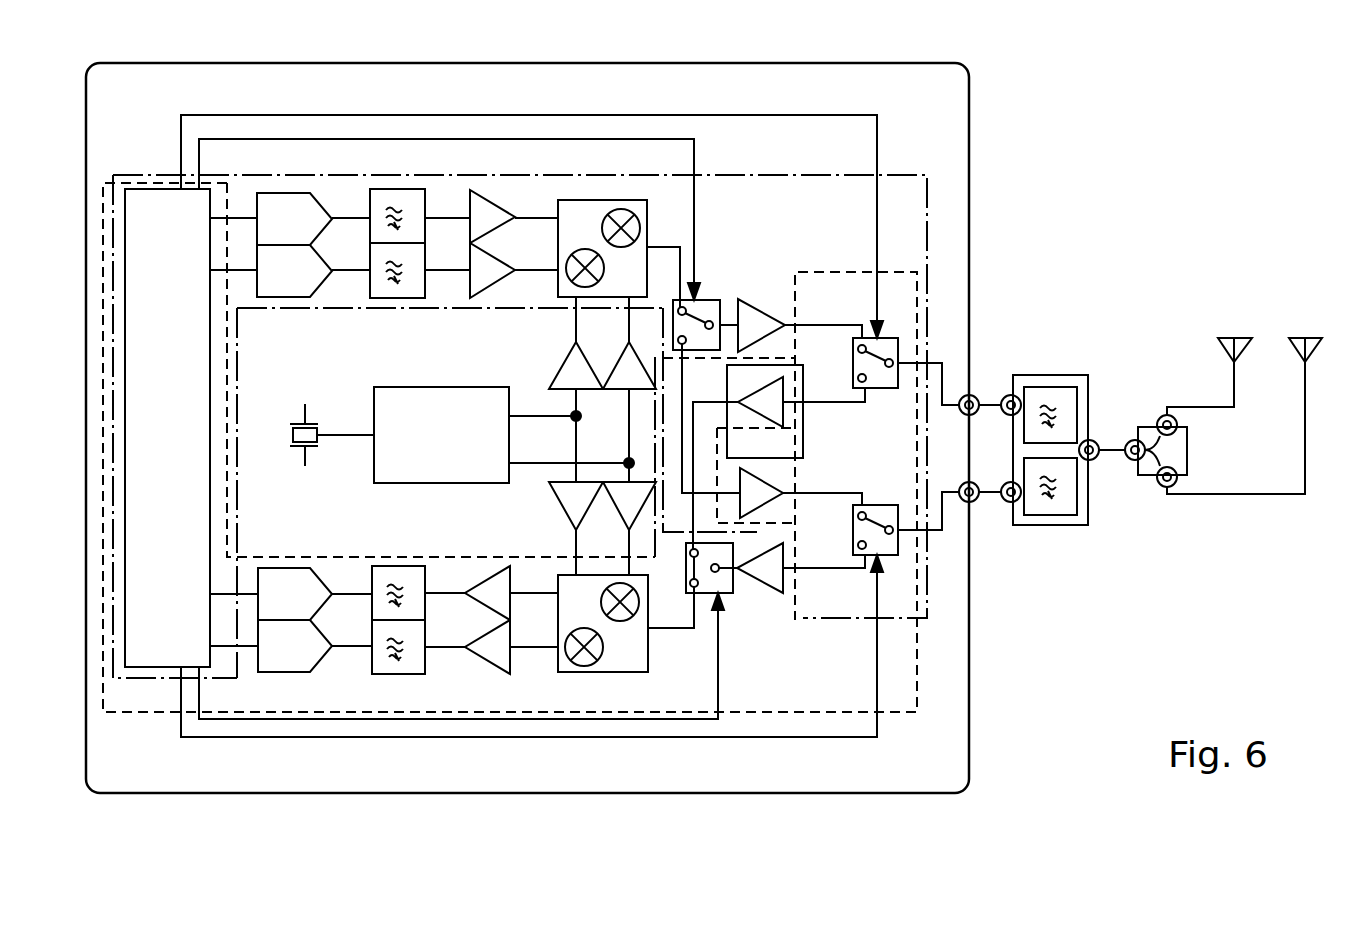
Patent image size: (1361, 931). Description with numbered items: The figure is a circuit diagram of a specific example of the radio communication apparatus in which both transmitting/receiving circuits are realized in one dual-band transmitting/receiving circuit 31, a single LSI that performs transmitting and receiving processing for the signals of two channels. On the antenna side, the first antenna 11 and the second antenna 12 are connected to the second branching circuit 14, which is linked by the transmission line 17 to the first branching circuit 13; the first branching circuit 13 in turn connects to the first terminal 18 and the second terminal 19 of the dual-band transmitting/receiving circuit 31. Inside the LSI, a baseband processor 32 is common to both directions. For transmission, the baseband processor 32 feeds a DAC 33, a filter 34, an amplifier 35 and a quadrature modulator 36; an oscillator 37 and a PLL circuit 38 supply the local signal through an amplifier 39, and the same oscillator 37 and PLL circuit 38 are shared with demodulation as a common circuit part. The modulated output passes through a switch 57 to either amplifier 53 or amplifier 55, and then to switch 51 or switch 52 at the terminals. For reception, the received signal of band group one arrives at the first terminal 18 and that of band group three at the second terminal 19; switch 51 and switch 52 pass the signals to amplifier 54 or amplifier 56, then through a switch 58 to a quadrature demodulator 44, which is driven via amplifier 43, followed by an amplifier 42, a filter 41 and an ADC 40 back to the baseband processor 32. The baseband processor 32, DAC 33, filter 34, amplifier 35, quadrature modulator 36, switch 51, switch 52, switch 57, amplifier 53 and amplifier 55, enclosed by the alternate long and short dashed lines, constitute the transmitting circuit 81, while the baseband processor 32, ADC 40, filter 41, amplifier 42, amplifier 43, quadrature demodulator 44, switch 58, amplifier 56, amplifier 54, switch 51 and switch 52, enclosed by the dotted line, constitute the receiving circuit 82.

The first antenna 11 is at (1240, 336).
The second antenna 12 is at (1312, 336).
The first branching circuit 13 is at (1050, 375).
The second branching circuit 14 is at (1189, 447).
The transmission line 17 is at (1118, 460).
The first terminal 18 is at (969, 503).
The second terminal 19 is at (970, 394).
The dual-band transmitting/receiving circuit 31 is at (652, 62).
The baseband processor 32 is at (152, 186).
The digital-to-analog converter 33 is at (285, 193).
The filter 34 is at (400, 189).
The amplifier 35 is at (490, 195).
The quadrature modulator 36 is at (615, 200).
The oscillator 37 is at (311, 410).
The PLL circuit 38 is at (465, 387).
The amplifier 39 is at (560, 366).
The analog-to-digital converter 40 is at (285, 568).
The filter 41 is at (396, 566).
The amplifier 42 is at (486, 570).
The amplifier 43 is at (558, 526).
The quadrature demodulator 44 is at (648, 660).
The switch 51 is at (880, 338).
The switch 52 is at (880, 505).
The amplifier 53 is at (762, 302).
The amplifier 54 is at (790, 376).
The amplifier 55 is at (780, 502).
The amplifier 56 is at (785, 598).
The switch 57 is at (710, 300).
The switch 58 is at (737, 590).
The transmitting circuit 81 is at (892, 173).
The receiving circuit 82 is at (912, 712).